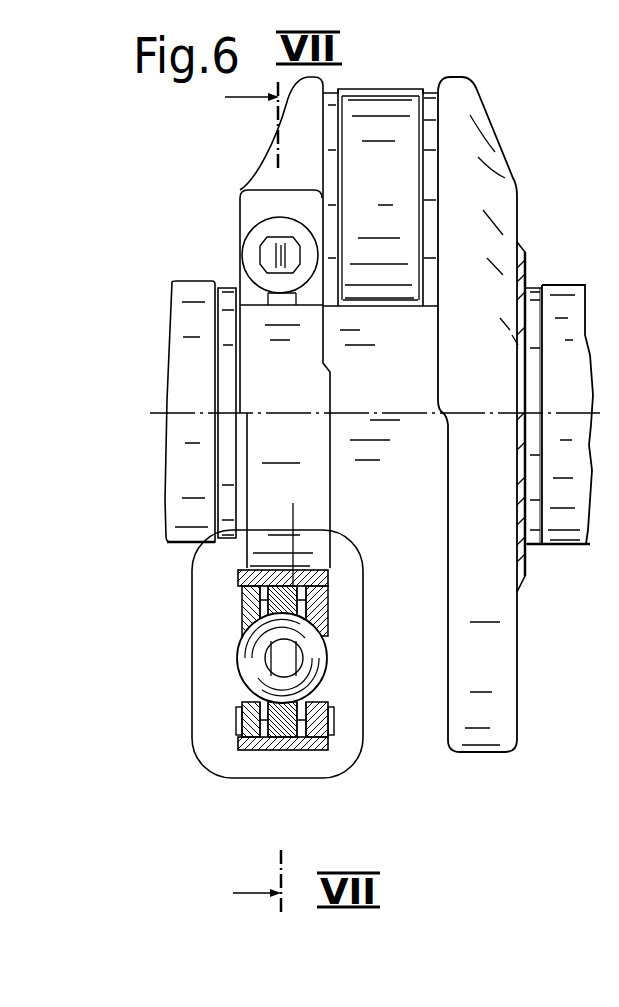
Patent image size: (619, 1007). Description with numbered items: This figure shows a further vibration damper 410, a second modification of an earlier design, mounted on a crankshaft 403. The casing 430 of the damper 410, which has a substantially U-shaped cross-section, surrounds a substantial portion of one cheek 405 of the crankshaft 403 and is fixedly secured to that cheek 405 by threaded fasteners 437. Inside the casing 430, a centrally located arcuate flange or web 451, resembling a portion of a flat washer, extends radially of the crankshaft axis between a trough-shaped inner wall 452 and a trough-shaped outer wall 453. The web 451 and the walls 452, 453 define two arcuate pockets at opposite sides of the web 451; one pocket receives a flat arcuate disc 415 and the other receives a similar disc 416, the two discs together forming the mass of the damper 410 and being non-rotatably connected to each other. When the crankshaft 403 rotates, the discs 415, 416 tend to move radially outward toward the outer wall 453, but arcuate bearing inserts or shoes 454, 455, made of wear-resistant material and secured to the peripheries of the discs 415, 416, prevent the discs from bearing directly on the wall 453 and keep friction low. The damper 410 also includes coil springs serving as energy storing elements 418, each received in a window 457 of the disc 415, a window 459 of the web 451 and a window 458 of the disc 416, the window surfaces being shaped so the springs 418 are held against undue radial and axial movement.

The crankshaft 403 is at (187, 290).
The cheek 405 is at (318, 556).
The damper 410 is at (198, 774).
The flat arcuate part (disc) 415 is at (252, 600).
The flat arcuate part (disc) 416 is at (328, 707).
The energy storing elements (coil springs) 418 is at (323, 683).
The casing 430 is at (243, 588).
The threaded fasteners 437 is at (262, 235).
The flange or web 451 is at (286, 745).
The inner wall 452 is at (290, 526).
The outer wall 453 is at (262, 745).
The bearing insert or shoe 454 is at (242, 732).
The bearing insert or shoe 455 is at (330, 742).
The window 457 is at (243, 628).
The window 458 is at (317, 624).
The window 459 is at (290, 658).